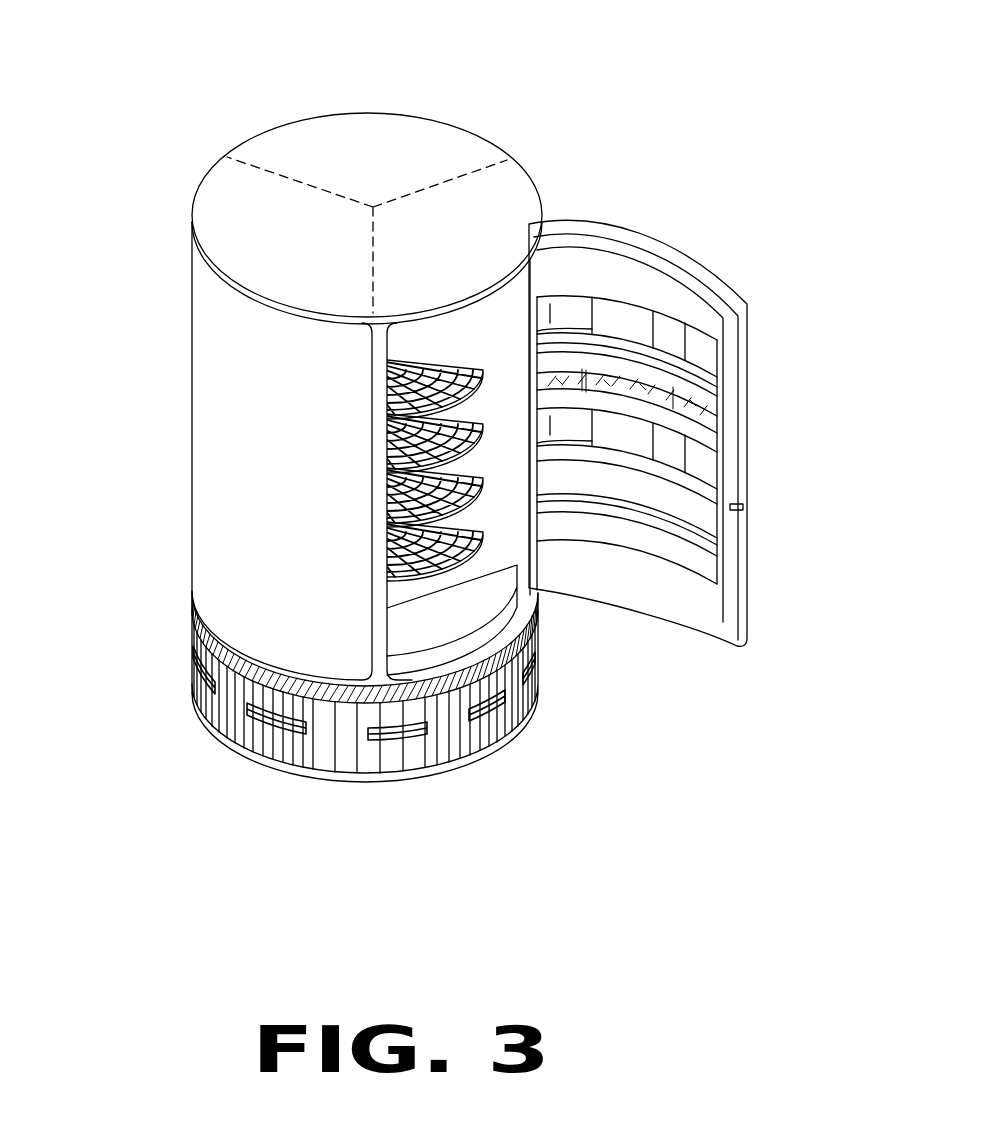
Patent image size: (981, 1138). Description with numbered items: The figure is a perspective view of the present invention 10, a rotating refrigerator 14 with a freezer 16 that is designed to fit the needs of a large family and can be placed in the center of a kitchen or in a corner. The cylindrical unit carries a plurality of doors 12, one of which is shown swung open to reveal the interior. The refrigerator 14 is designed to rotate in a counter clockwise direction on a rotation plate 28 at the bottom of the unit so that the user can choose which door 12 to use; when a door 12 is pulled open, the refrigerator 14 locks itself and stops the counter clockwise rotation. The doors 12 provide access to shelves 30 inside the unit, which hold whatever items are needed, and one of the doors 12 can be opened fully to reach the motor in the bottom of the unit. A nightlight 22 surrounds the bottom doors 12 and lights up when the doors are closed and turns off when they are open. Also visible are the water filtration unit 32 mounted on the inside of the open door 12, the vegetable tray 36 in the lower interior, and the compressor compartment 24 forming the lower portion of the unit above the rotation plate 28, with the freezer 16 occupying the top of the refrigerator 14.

The present invention 10 is at (576, 140).
The door 12 is at (710, 332).
The refrigerator 14 is at (240, 222).
The freezer 16 is at (390, 145).
The nightlight 22 is at (270, 688).
The compressor compartment 24 is at (205, 671).
The rotation plate 28 is at (382, 778).
The shelves 30 is at (398, 430).
The water filtration unit 32 is at (633, 434).
The vegetable tray 36 is at (537, 600).